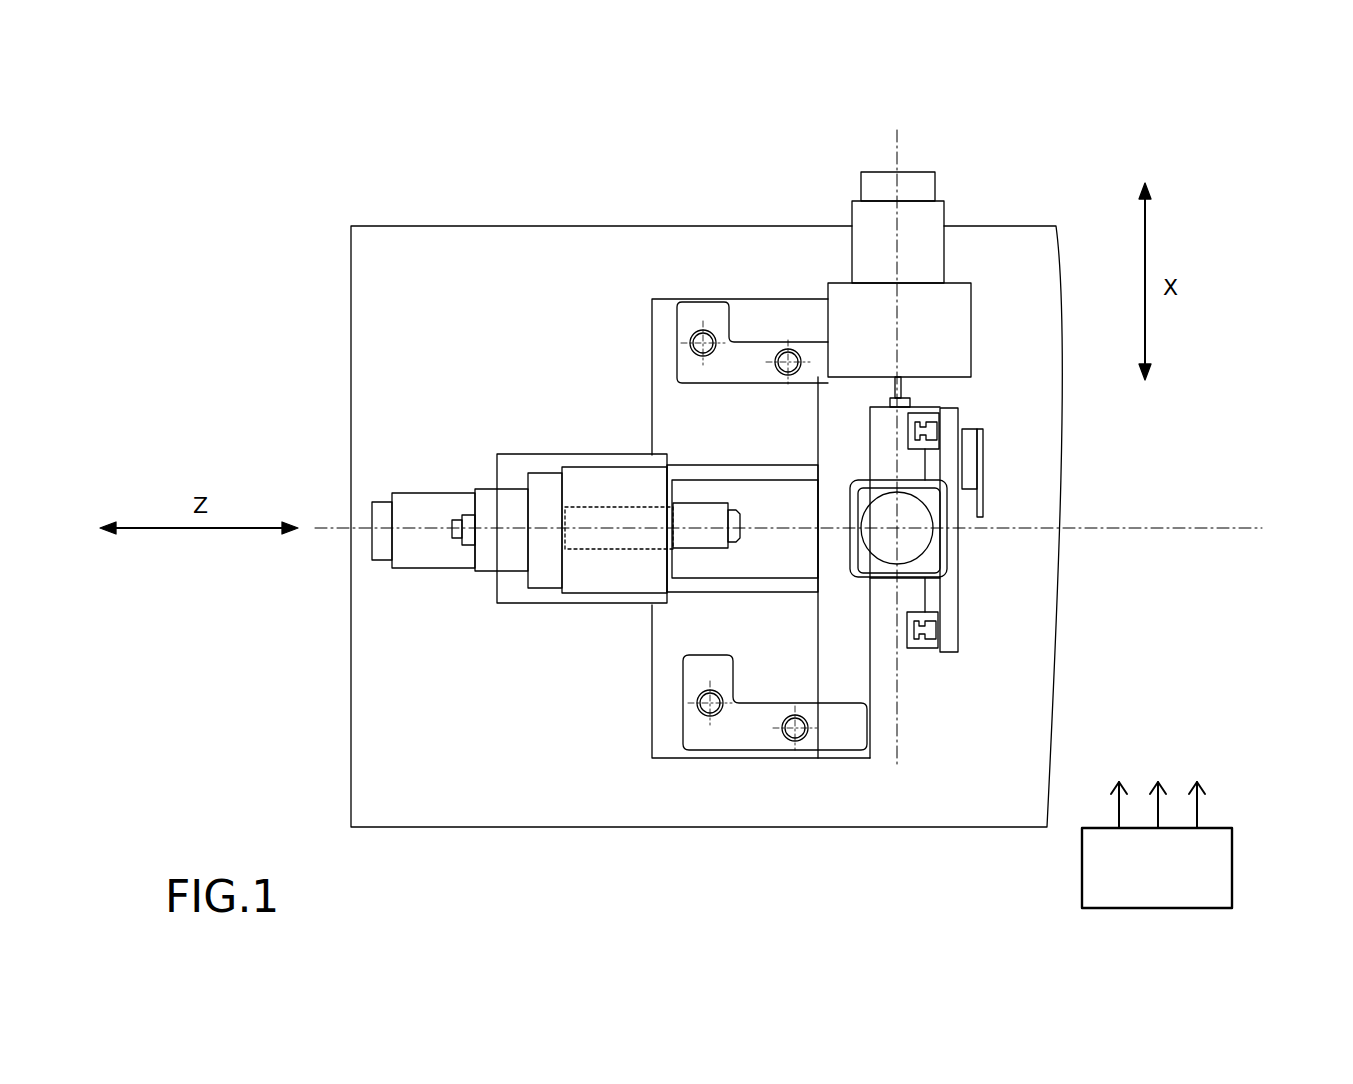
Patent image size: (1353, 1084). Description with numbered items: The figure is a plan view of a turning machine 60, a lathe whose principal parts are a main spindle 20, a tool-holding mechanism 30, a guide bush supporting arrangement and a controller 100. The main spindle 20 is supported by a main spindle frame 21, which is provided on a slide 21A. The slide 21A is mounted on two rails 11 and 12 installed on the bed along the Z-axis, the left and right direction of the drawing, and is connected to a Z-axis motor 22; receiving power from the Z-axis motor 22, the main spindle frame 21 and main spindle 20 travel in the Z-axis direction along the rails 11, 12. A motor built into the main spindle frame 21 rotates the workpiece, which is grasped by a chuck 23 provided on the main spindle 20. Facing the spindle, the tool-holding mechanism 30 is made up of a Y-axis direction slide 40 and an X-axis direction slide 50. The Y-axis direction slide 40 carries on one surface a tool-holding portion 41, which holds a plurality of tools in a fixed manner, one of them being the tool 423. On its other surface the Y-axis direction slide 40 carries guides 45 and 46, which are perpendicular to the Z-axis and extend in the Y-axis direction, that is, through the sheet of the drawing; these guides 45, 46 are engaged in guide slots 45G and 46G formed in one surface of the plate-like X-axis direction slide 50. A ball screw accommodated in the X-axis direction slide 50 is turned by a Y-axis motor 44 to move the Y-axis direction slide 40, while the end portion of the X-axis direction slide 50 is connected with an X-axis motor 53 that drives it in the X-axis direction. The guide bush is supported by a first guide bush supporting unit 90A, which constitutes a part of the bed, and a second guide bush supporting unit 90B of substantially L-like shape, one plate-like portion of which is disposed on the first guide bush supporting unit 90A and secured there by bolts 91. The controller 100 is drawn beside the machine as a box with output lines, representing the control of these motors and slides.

The turning machine 60 is at (192, 167).
The rail 11 is at (710, 379).
The rail 12 is at (709, 674).
The main spindle 20 is at (466, 622).
The main spindle frame 21 is at (570, 398).
The slide 21A is at (463, 689).
The Z-axis motor 22 is at (384, 458).
The chuck 23 is at (634, 702).
The tool-holding mechanism 30 is at (1087, 539).
The Y-axis direction slide 40 is at (975, 467).
The tool-holding portion 41 is at (979, 548).
The Y-axis motor 44 is at (1033, 547).
The guide 45 is at (1018, 426).
The guide slot 45G is at (1014, 360).
The guide 46 is at (1015, 678).
The guide slot 46G is at (966, 742).
The X-axis direction slide 50 is at (879, 638).
The X-axis motor 53 is at (863, 213).
The first guide bush supporting unit 90A is at (740, 594).
The second guide bush supporting unit 90B is at (763, 740).
The bolt 91 is at (745, 524).
The controller 100 is at (1213, 845).
The tool 423 is at (1062, 473).